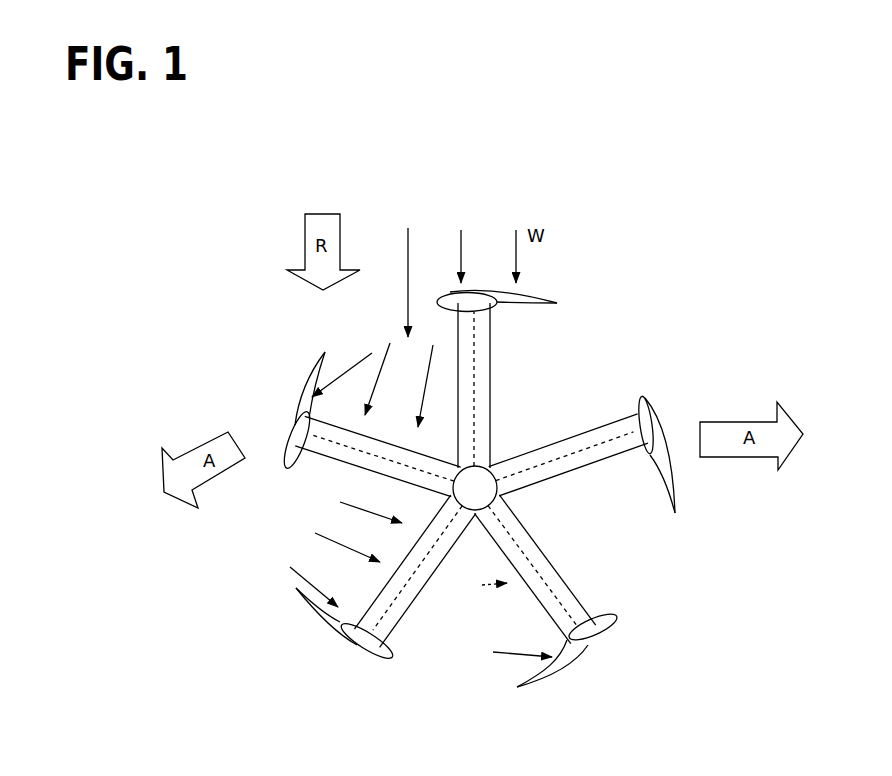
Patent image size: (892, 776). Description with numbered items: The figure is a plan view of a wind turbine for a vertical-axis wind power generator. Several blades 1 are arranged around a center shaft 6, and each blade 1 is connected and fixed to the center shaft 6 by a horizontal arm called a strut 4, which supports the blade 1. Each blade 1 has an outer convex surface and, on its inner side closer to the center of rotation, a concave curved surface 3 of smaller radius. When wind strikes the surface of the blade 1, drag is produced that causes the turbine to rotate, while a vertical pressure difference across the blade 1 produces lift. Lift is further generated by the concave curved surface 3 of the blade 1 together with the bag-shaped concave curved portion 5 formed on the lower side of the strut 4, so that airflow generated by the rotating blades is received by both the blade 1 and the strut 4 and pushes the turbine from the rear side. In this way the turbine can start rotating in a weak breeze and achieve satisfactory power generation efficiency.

The blade 1 is at (295, 432).
The concave curved surface 3 is at (500, 302).
The strut 4 is at (597, 443).
The bag-shaped concave curved portion 5 is at (488, 418).
The center shaft 6 is at (472, 492).